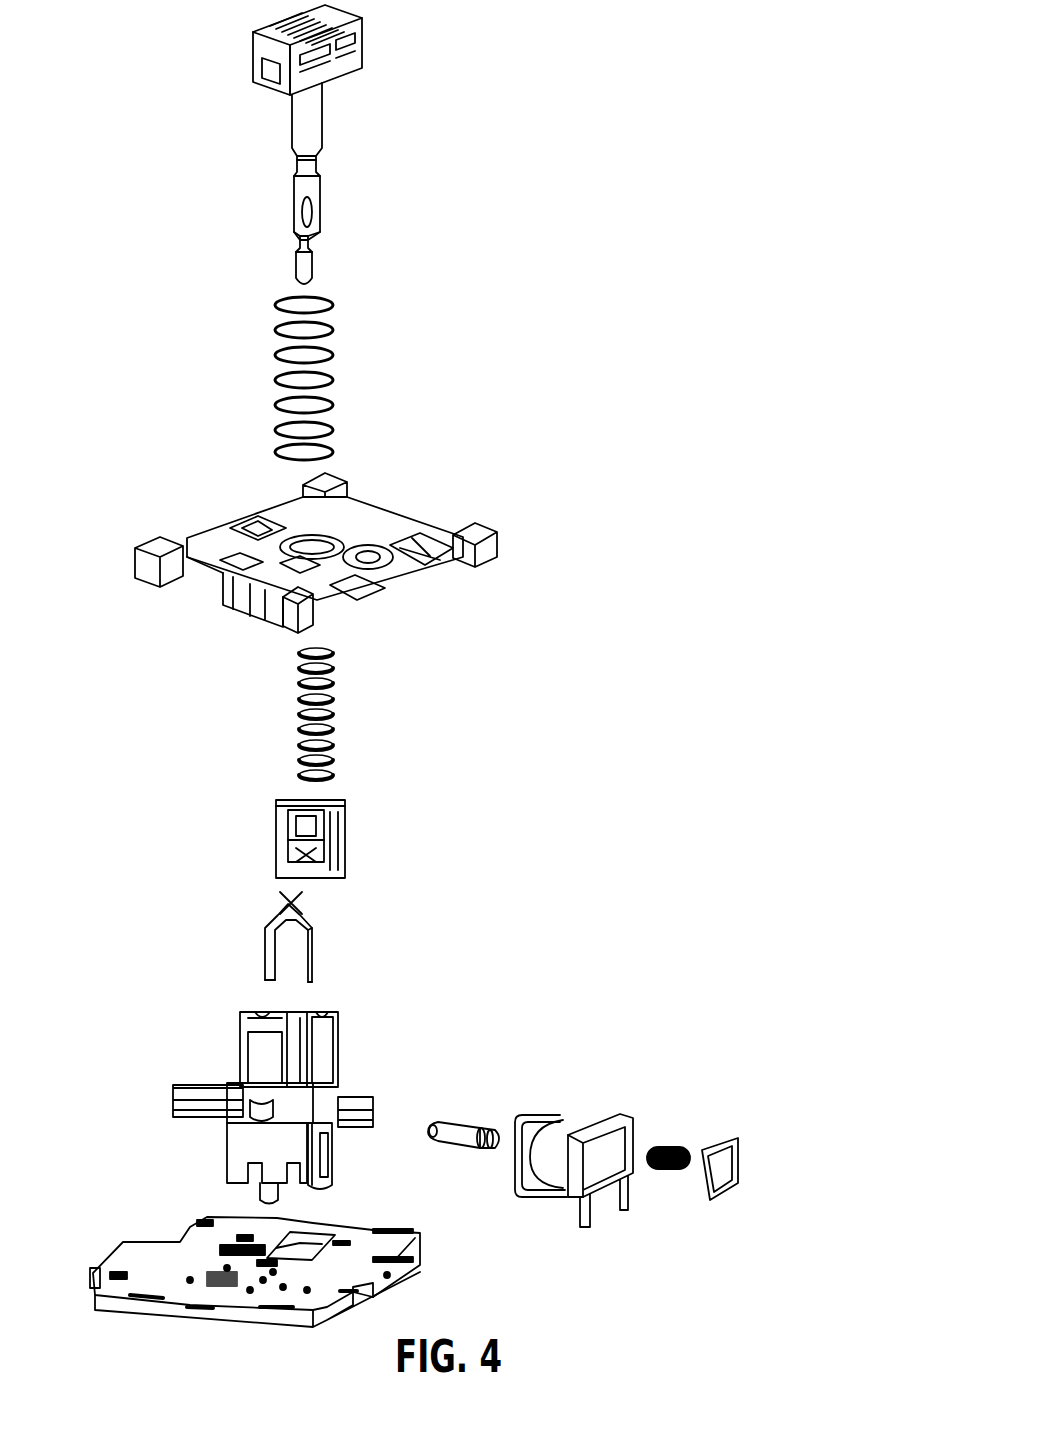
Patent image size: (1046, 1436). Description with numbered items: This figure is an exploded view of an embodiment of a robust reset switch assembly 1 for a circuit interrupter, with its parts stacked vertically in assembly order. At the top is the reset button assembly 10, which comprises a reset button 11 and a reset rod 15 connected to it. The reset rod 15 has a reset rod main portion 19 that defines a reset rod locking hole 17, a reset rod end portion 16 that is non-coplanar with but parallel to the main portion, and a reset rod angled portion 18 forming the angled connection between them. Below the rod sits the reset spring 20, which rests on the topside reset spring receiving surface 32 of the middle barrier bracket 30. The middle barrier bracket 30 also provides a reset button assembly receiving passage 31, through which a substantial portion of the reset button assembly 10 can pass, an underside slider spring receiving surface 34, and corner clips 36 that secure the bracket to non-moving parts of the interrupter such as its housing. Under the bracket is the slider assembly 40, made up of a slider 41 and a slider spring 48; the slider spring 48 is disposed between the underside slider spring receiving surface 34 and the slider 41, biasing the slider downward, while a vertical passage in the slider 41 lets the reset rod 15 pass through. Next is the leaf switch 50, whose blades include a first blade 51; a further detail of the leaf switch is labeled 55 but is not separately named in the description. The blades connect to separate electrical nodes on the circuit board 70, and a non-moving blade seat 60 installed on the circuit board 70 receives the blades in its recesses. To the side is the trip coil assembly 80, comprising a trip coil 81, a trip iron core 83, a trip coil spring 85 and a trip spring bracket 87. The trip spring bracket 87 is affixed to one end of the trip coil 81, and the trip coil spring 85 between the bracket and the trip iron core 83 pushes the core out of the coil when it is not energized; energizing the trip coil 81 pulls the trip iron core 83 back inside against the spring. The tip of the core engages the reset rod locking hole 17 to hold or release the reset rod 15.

The robust reset switch assembly 1 is at (800, 1318).
The reset button assembly 10 is at (195, 2).
The reset button 11 is at (360, 28).
The reset rod 15 is at (330, 190).
The reset rod end portion 16 is at (305, 263).
The reset rod locking hole 17 is at (307, 213).
The reset rod angled portion 18 is at (298, 240).
The reset rod main portion 19 is at (297, 196).
The reset spring 20 is at (330, 380).
The middle barrier bracket 30 is at (118, 570).
The reset button assembly receiving passage 31 is at (318, 545).
The topside reset spring receiving surface 32 is at (207, 540).
The underside slider spring receiving surface 34 is at (212, 578).
The corner clips 36 is at (497, 550).
The slider assembly 40 is at (250, 648).
The slider 41 is at (340, 825).
The slider spring 48 is at (330, 740).
The leaf switch 50 is at (168, 883).
The first blade 51 is at (265, 947).
The contact arm 55 is at (320, 942).
The blade seat 60 is at (335, 1050).
The circuit board 70 is at (380, 1295).
The trip coil assembly 80 is at (745, 1085).
The trip coil 81 is at (567, 1180).
The trip iron core 83 is at (460, 1142).
The trip coil spring 85 is at (668, 1170).
The trip spring bracket 87 is at (735, 1165).